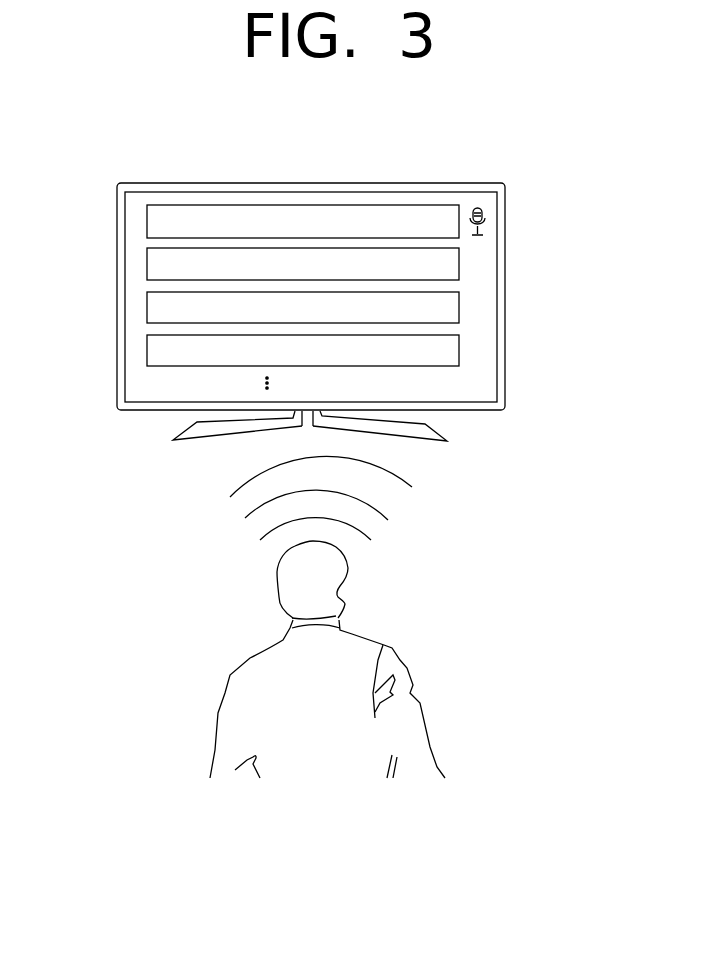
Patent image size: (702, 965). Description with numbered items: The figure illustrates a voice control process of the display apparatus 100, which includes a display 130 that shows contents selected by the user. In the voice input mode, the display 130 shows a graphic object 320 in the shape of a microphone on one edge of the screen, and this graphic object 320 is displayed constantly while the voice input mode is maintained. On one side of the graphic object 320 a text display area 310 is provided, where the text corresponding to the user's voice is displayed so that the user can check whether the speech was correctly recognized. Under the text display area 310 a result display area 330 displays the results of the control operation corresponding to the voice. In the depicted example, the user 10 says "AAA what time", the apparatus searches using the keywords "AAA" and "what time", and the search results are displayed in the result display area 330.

The display apparatus 100 is at (455, 184).
The display 130 is at (272, 195).
The text display area 310 is at (147, 215).
The graphic object 320 is at (482, 208).
The result display area 330 is at (113, 248).
The user 10 is at (348, 578).